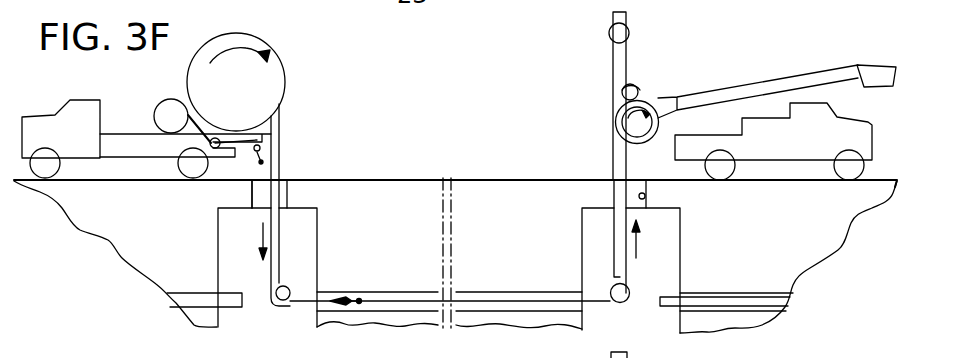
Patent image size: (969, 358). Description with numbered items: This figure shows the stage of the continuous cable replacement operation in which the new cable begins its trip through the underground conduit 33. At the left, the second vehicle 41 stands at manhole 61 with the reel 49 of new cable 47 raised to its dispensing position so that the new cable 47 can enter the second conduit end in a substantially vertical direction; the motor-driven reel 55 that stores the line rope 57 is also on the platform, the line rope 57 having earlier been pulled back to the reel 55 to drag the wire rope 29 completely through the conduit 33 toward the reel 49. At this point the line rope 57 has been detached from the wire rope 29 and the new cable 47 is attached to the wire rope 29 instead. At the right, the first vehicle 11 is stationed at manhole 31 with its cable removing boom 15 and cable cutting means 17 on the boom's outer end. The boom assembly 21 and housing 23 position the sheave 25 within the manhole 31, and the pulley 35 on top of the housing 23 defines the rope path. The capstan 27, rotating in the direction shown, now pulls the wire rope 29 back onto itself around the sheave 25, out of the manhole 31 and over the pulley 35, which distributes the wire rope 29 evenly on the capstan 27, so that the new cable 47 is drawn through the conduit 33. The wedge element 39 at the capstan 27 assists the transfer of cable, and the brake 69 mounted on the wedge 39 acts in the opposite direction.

The first vehicle 11 is at (872, 143).
The cable removing boom 15 is at (760, 80).
The cable cutting means 17 is at (873, 65).
The boom assembly 21 is at (617, 190).
The housing 23 is at (612, 52).
The sheave 25 is at (627, 303).
The capstan 27 is at (647, 137).
The wire rope 29 is at (407, 303).
The manhole 31 is at (645, 196).
The conduit 33 is at (492, 290).
The pulley 35 is at (628, 33).
The wedge element 39 is at (637, 87).
The second vehicle 41 is at (22, 114).
The new cable 47 is at (282, 127).
The reel 49 is at (285, 63).
The reel 55 is at (158, 105).
The line rope 57 is at (203, 130).
The manhole 61 is at (283, 178).
The brake 69 is at (620, 92).